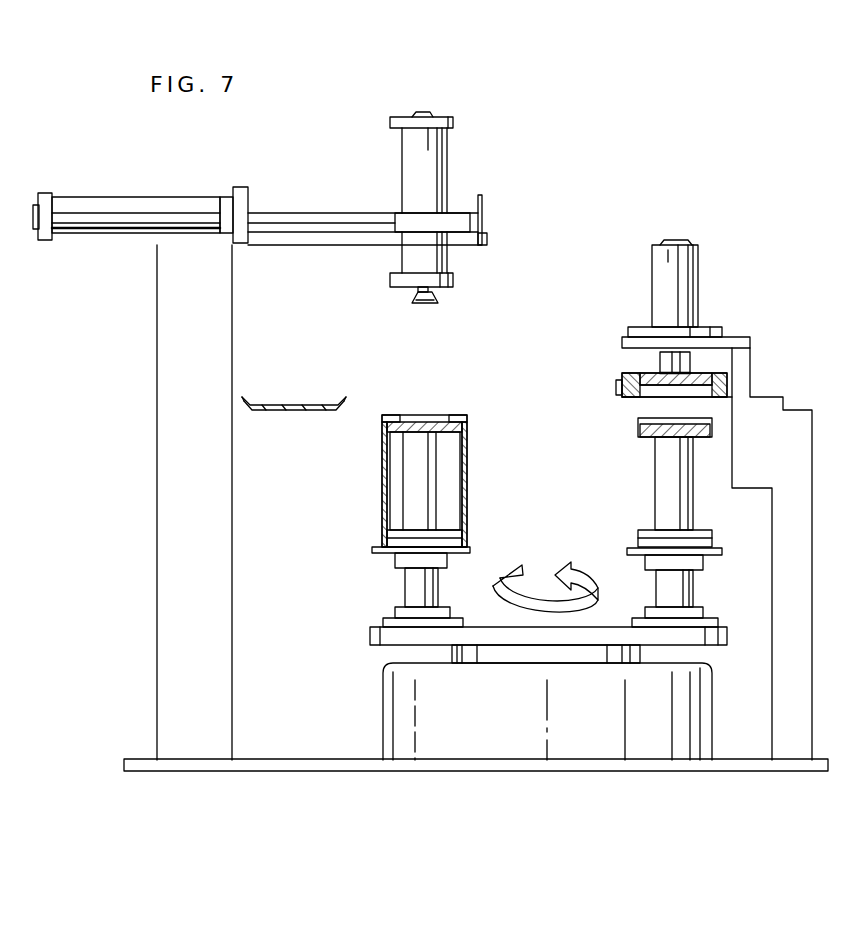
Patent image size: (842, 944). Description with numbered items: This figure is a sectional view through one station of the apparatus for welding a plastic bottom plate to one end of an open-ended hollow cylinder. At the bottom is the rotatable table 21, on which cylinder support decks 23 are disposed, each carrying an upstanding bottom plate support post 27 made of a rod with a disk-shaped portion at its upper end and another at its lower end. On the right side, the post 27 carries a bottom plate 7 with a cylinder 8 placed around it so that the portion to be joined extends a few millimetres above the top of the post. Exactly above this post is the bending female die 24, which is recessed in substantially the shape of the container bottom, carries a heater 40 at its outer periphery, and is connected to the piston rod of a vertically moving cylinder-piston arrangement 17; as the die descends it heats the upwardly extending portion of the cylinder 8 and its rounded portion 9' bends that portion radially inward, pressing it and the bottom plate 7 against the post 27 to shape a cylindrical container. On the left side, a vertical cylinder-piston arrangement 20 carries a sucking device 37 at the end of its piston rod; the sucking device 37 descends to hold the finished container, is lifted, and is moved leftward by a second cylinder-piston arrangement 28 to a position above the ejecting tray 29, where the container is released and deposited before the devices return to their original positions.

The cylinder-piston arrangement 28 is at (167, 200).
The cylinder-piston arrangement 20 is at (447, 182).
The sucking device 37 is at (410, 297).
The ejecting tray 29 is at (295, 411).
The bottom plate 7 is at (418, 420).
The cylinder 8 is at (465, 491).
The cylinder support deck 23 is at (470, 551).
The rotatable table 21 is at (728, 636).
The cylinder-piston arrangement 17 is at (698, 306).
The bending female die 24 is at (622, 378).
The heater 40 is at (618, 392).
The rounded portion 9' is at (641, 352).
The bottom plate support post 27 is at (628, 418).